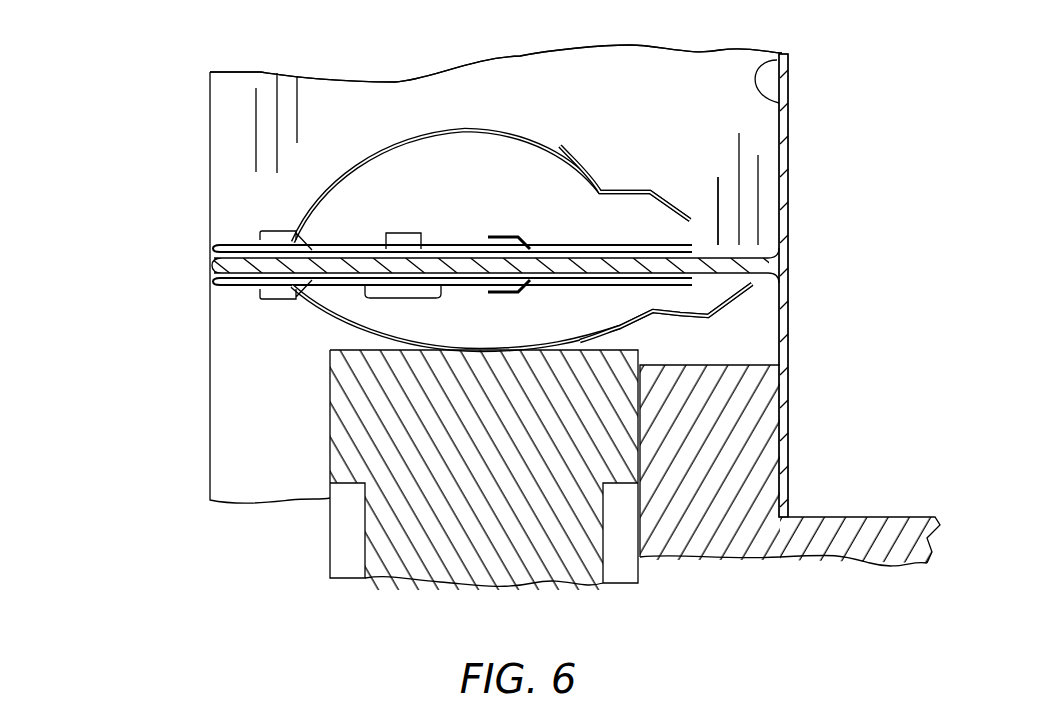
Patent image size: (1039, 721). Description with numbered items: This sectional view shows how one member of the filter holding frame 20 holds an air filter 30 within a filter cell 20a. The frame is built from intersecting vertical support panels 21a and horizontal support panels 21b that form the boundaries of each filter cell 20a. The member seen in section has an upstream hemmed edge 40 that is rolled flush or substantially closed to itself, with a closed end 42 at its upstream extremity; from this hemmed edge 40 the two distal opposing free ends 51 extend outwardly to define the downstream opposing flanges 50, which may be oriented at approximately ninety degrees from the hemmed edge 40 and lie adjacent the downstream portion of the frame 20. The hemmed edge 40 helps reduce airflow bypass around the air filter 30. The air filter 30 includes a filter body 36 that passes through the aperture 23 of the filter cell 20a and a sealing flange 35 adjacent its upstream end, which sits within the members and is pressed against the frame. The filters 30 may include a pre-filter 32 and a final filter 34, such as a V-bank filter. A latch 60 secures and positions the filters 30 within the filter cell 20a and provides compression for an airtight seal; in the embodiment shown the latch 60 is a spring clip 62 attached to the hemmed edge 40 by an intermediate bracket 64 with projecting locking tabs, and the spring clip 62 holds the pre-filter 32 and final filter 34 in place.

The filter holding frame 20 is at (86, 243).
The filter cell 20a is at (190, 145).
The vertical support panel 21a is at (787, 132).
The horizontal support panel 21b is at (715, 243).
The aperture 23 is at (783, 53).
The air filter 30 is at (515, 499).
The pre-filter 32 is at (335, 418).
The final filter 34 is at (780, 530).
The sealing flange 35 is at (726, 430).
The filter body 36 is at (875, 534).
The upstream hemmed edge 40 is at (413, 93).
The closed end 42 is at (211, 265).
The downstream opposing flanges 50 is at (787, 205).
The distal opposing free ends 51 is at (787, 112).
The latch 60 is at (334, 138).
The spring clip 62 is at (578, 166).
The intermediate bracket 64 is at (211, 249).